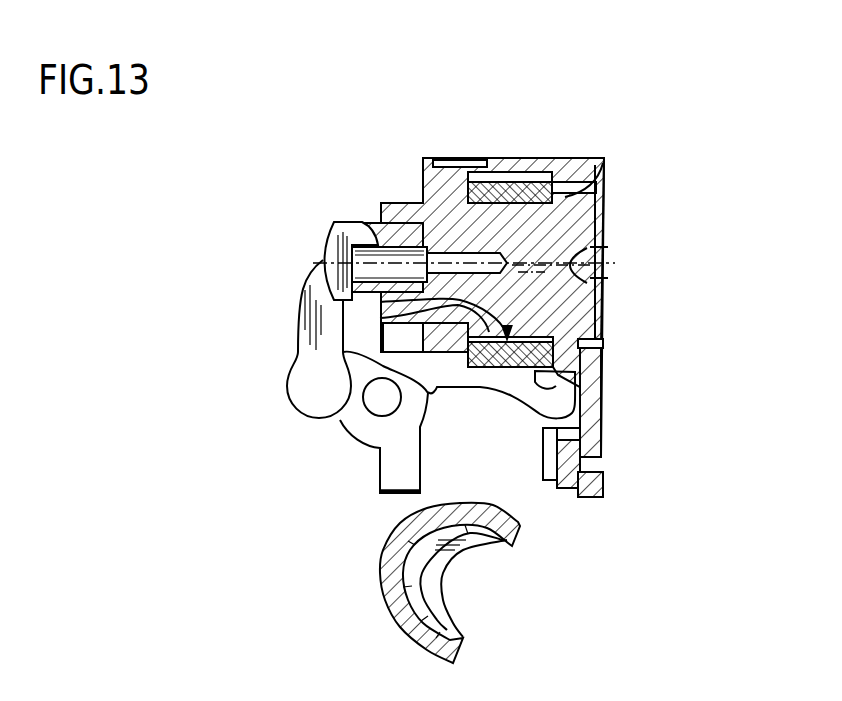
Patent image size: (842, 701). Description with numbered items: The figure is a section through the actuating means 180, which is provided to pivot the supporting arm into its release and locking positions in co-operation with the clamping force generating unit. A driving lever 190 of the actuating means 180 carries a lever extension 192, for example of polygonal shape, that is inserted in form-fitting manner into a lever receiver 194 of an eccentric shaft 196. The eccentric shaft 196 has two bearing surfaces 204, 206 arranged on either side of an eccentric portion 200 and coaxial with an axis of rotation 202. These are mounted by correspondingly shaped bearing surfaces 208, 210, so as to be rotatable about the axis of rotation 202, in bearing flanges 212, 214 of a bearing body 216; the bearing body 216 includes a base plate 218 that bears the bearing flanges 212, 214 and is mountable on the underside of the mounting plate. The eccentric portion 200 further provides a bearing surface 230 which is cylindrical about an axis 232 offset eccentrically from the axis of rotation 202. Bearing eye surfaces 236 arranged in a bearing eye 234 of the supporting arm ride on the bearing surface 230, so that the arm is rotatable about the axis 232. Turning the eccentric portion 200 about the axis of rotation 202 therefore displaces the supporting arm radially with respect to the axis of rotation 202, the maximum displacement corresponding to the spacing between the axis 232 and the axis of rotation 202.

The actuating means 180 is at (559, 130).
The driving lever 190 is at (385, 480).
The lever extension 192 is at (333, 222).
The lever receiver 194 is at (378, 208).
The eccentric shaft 196 is at (605, 170).
The eccentric portion 200 is at (512, 178).
The axis of rotation 202 is at (622, 243).
The bearing surface 204 is at (447, 168).
The bearing surface 206 is at (605, 161).
The bearing surface 208 is at (414, 200).
The bearing surface 210 is at (604, 196).
The bearing flange 212 is at (381, 351).
The bearing flange 214 is at (605, 361).
The bearing body 216 is at (580, 143).
The base plate 218 is at (482, 168).
The bearing surface 230 is at (603, 389).
The axis 232 is at (617, 278).
The bearing eye 234 is at (380, 302).
The bearing eye surfaces 236 is at (382, 321).